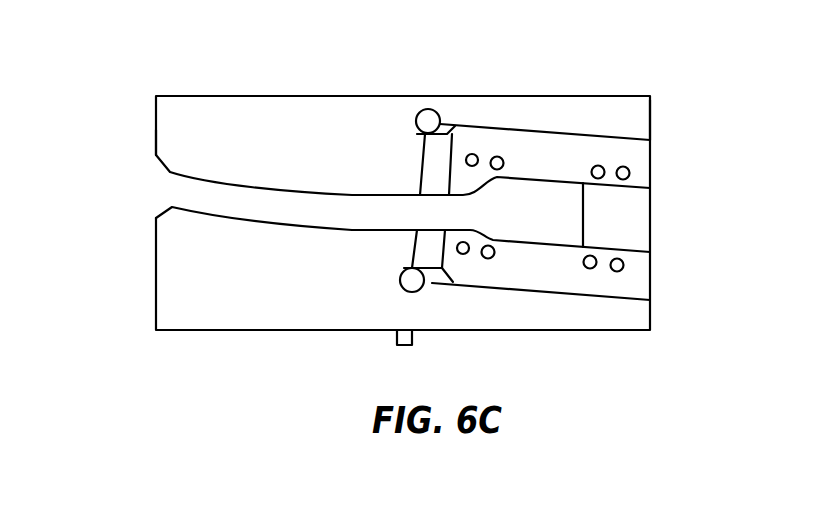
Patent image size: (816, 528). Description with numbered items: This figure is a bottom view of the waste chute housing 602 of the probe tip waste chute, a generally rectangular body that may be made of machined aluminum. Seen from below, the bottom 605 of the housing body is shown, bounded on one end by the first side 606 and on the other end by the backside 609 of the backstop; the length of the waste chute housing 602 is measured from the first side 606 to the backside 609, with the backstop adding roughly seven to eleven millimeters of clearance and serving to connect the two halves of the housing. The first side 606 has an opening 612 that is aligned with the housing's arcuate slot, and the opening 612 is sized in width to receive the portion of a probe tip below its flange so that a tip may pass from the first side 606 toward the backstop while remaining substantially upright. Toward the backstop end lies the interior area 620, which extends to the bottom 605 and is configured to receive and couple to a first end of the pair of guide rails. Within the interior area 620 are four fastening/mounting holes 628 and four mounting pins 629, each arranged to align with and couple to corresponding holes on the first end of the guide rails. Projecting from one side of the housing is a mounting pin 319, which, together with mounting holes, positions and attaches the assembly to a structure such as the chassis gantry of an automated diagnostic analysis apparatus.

The waste chute housing 602 is at (404, 190).
The bottom 605 is at (252, 128).
The first side 606 is at (156, 128).
The backside 609 is at (650, 118).
The opening 612 is at (150, 187).
The interior area 620 is at (668, 218).
The fastening/mounting holes 628 is at (500, 155).
The mounting pins 629 is at (598, 164).
The mounting pin 319 is at (397, 346).